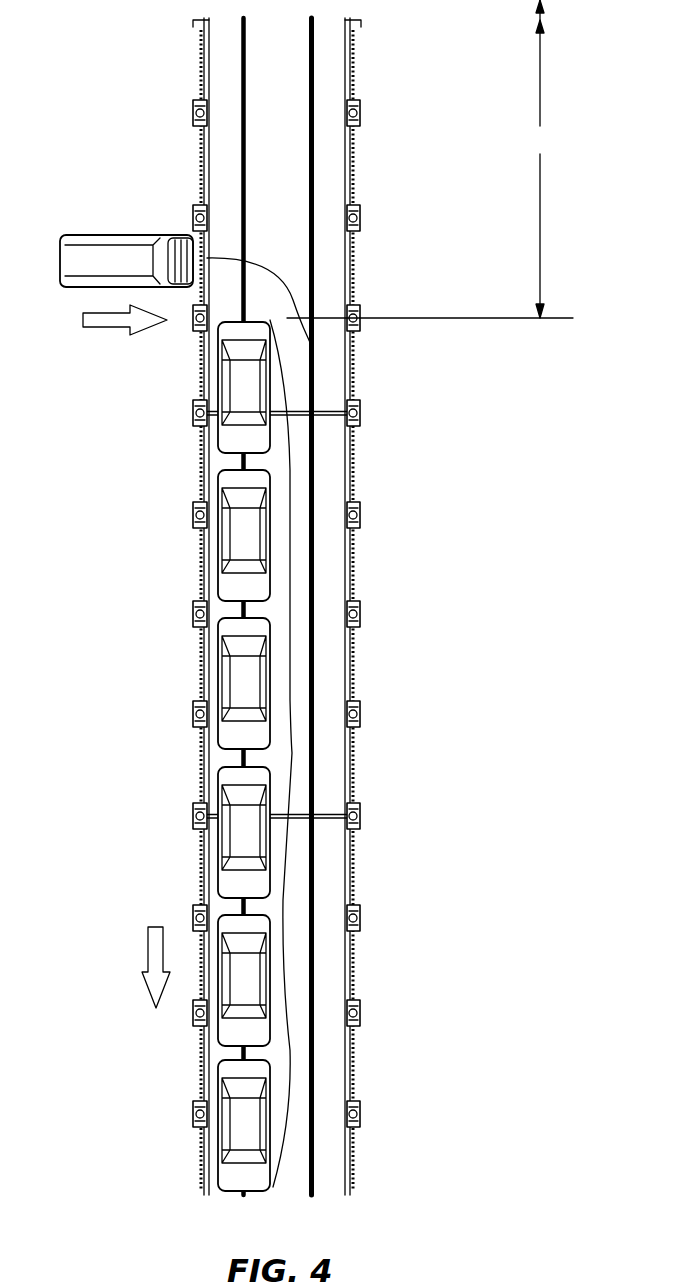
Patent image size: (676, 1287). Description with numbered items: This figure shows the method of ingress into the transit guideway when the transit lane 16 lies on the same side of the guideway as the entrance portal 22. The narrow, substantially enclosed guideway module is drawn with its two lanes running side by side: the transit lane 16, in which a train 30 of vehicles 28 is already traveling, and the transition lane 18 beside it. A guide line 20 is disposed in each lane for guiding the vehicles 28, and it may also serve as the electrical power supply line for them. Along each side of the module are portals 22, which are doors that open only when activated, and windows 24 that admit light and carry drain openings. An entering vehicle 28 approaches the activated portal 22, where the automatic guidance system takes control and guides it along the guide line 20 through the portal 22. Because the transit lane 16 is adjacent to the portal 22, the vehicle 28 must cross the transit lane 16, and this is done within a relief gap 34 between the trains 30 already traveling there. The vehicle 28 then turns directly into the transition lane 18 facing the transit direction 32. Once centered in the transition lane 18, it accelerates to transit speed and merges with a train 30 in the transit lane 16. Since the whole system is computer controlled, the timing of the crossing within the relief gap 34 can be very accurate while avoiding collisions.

The transit lane 16 is at (228, 178).
The transition lane 18 is at (323, 497).
The guide line 20 is at (240, 73).
The portal 22 is at (205, 463).
The window 24 is at (205, 560).
The vehicle 28 is at (242, 845).
The train 30 is at (293, 753).
The transit direction 32 is at (148, 957).
The relief gap 34 is at (430, 159).